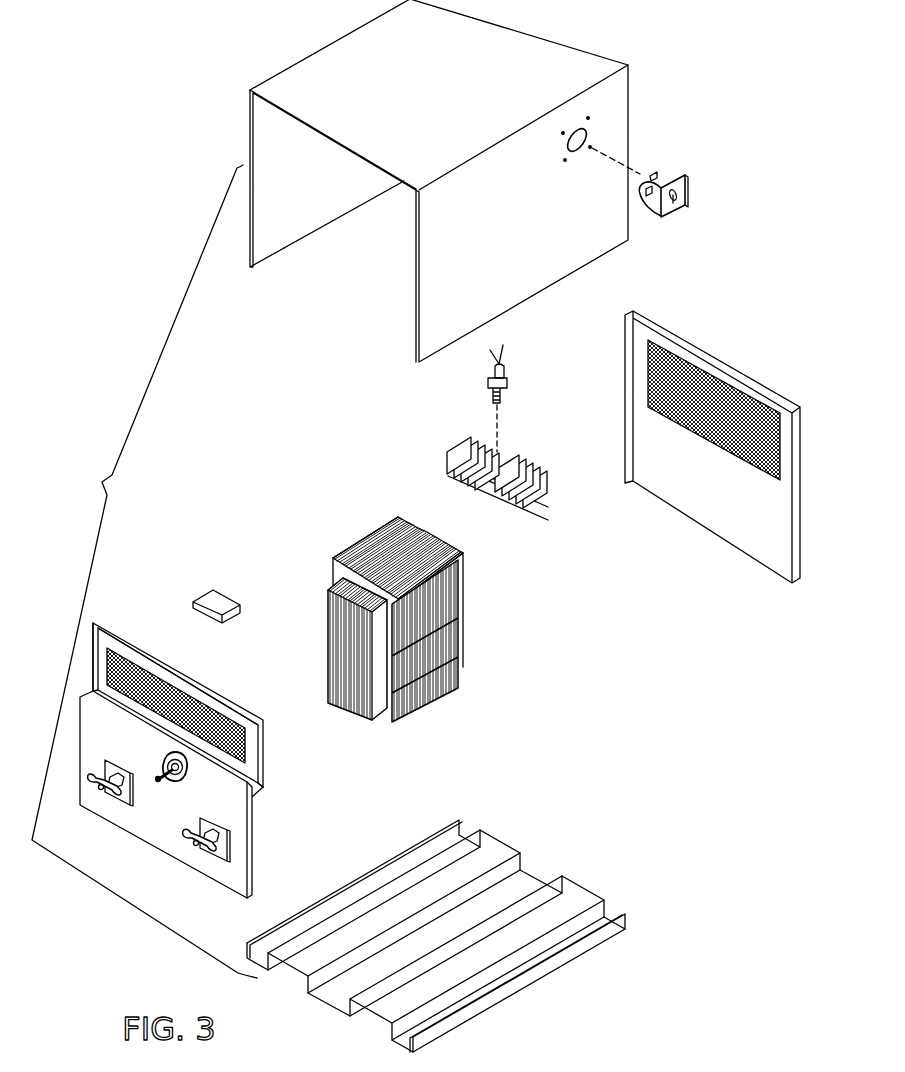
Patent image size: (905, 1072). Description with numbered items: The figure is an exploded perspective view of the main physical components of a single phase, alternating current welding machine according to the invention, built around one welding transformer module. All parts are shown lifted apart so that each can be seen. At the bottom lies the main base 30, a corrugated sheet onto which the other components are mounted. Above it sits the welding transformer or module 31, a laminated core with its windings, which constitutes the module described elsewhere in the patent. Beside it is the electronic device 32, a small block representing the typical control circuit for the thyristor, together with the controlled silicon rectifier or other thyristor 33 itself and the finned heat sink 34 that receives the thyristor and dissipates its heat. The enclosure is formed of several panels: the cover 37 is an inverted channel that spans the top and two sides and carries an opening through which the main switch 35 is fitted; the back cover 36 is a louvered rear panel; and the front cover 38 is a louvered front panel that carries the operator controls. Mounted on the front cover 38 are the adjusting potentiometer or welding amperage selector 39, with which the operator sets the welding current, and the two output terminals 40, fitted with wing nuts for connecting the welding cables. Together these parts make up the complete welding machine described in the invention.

The main base 30 is at (436, 936).
The welding transformer or module 31 is at (395, 618).
The electronic device 32 is at (219, 597).
The controlled silicon rectifier or other thyristor 33 is at (512, 398).
The heat sink 34 is at (484, 474).
The main switch 35 is at (666, 184).
The back cover 36 is at (712, 447).
The cover 37 is at (445, 181).
The front cover 38 is at (171, 760).
The adjusting potentiometer or welding amperage selector 39 is at (188, 781).
The output terminals 40 is at (190, 850).